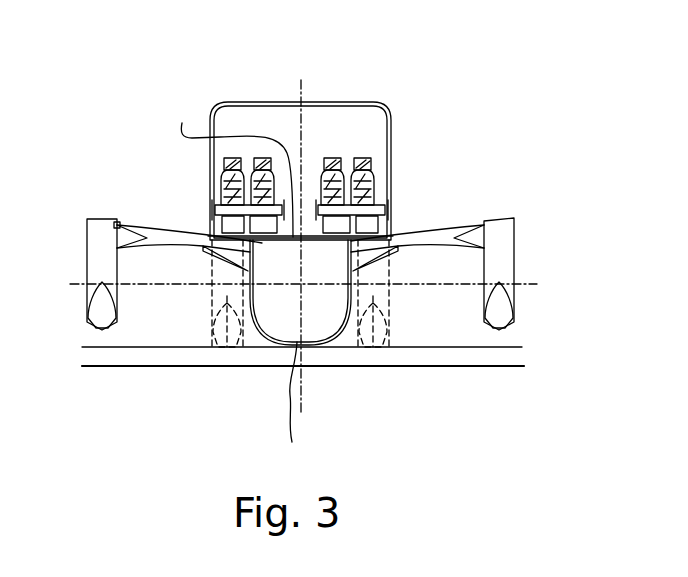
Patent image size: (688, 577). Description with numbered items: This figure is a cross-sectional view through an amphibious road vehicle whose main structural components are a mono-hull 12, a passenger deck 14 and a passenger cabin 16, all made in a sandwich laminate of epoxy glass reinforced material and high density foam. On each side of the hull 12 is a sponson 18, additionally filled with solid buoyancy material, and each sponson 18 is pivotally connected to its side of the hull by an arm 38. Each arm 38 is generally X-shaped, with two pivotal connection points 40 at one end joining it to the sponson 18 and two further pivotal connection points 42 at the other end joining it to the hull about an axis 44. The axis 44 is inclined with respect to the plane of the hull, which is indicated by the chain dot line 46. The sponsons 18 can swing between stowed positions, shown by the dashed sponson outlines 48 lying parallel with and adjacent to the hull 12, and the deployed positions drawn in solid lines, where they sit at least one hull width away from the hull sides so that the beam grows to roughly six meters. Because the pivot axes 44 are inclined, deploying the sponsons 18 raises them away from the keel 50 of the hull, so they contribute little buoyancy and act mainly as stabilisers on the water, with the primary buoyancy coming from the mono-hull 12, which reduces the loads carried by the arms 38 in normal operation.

The mono-hull 12 is at (273, 344).
The passenger deck 14 is at (231, 169).
The passenger cabin 16 is at (357, 103).
The sponson 18 is at (93, 258).
The arm 38 is at (147, 232).
The pivotal connection point 40 is at (117, 224).
The further pivotal connection point 42 is at (213, 273).
The axis 44 is at (257, 246).
The chain dot line 46 is at (298, 92).
The dashed sponson outline 48 is at (213, 306).
The keel 50 is at (288, 405).